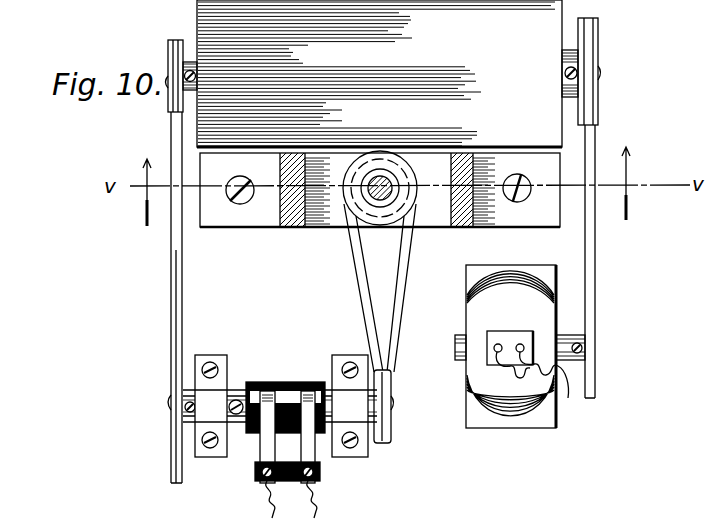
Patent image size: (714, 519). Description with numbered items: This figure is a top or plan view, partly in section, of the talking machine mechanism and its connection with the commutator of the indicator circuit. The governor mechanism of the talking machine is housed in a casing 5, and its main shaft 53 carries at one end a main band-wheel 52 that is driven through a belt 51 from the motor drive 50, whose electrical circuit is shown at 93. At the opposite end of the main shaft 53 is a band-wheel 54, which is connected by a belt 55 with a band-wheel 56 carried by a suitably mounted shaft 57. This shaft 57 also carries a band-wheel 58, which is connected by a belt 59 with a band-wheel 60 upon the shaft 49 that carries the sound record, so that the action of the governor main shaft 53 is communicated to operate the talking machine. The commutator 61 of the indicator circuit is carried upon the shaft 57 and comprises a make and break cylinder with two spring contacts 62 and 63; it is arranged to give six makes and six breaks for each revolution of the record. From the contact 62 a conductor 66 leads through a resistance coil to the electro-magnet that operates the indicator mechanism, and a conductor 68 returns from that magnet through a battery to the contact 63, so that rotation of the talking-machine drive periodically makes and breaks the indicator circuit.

The casing 5 is at (379, 73).
The shaft 49 is at (386, 181).
The motor drive 50 is at (556, 408).
The belt 51 is at (598, 243).
The band-wheel 52 is at (598, 101).
The main shaft 53 is at (186, 62).
The band-wheel 54 is at (168, 44).
The belt 55 is at (172, 276).
The band-wheel 56 is at (170, 437).
The shaft 57 is at (236, 399).
The band-wheel 58 is at (394, 378).
The belt 59 is at (398, 290).
The band-wheel 60 is at (387, 217).
The commutator 61 is at (307, 382).
The spring contact 62 is at (263, 451).
The spring contact 63 is at (307, 450).
The conductor 66 is at (266, 500).
The conductor 68 is at (321, 505).
The circuit 93 is at (568, 396).